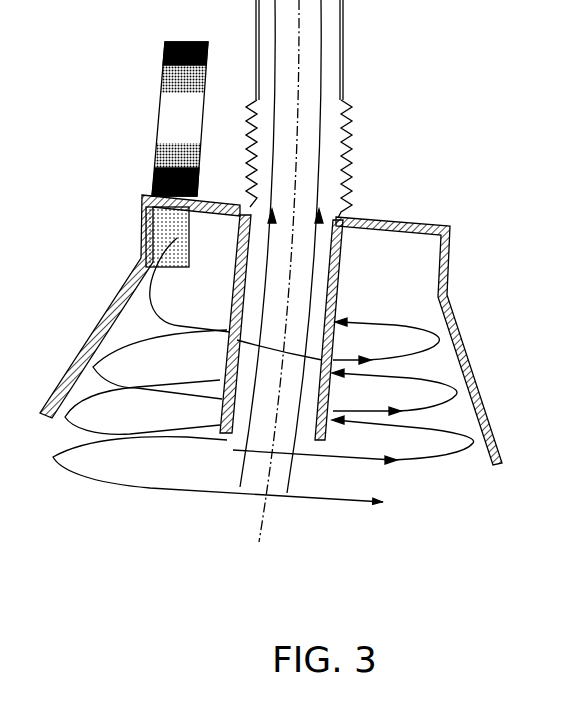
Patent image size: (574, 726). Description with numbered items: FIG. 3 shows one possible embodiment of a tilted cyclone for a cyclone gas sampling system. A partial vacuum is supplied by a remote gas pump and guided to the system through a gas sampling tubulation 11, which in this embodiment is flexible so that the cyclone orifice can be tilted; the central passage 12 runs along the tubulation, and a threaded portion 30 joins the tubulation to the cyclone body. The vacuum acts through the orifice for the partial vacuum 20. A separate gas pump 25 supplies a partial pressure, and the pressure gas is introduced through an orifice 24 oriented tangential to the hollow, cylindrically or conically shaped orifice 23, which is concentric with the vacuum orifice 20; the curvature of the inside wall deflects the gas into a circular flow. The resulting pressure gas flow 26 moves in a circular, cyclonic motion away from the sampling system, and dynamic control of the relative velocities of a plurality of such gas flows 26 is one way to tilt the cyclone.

The tubulation 11 is at (345, 33).
The passage 12 is at (280, 43).
The threaded portion 30 is at (348, 188).
The gas pump 25 is at (155, 132).
The orifice 24 is at (155, 233).
The hollow cylindrically or conically shaped orifice 23 is at (60, 382).
The orifice for the partial vacuum 20 is at (233, 437).
The pressure gas flow 26 is at (200, 492).